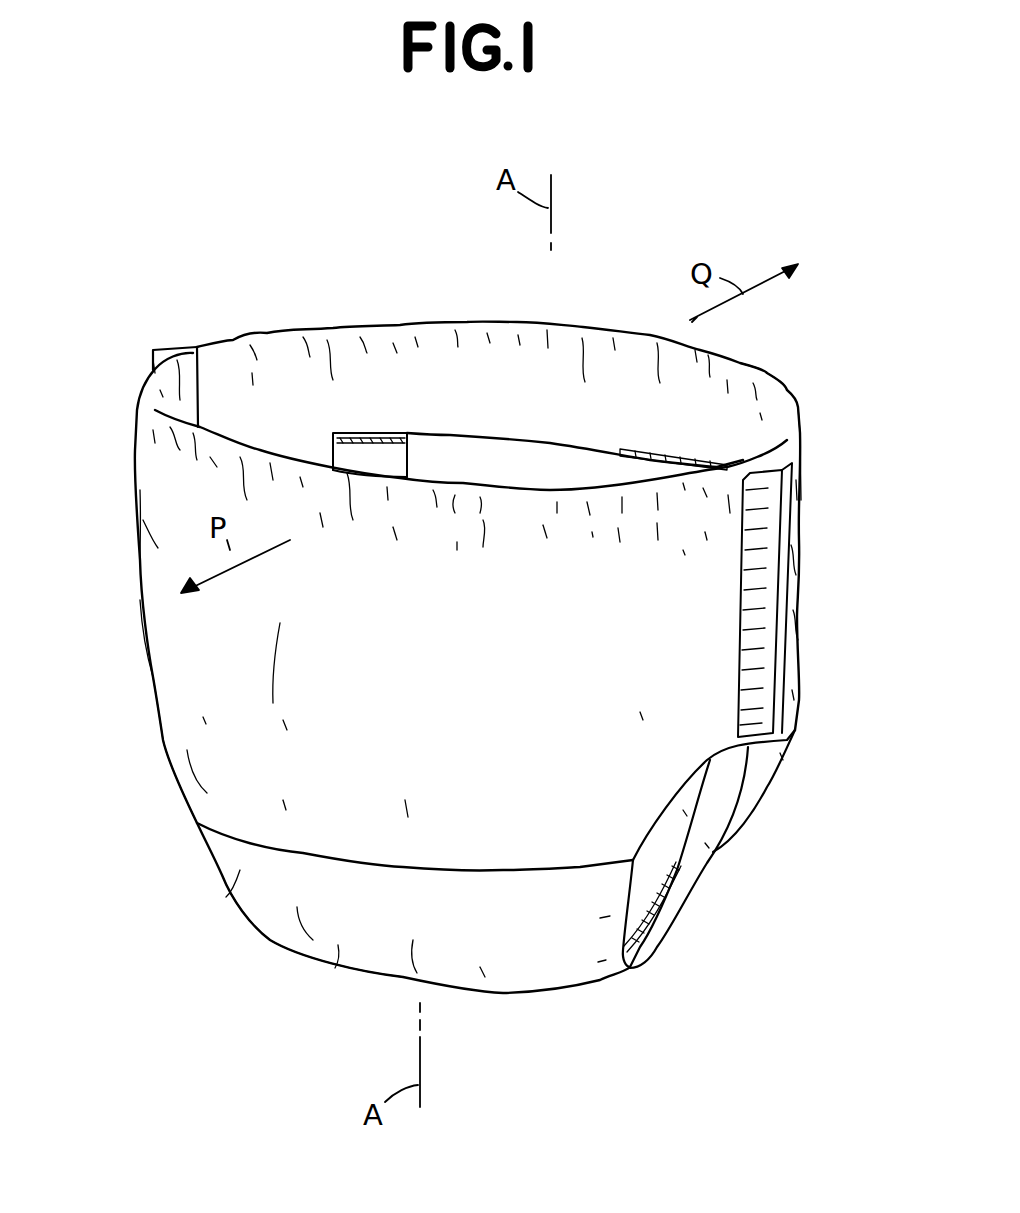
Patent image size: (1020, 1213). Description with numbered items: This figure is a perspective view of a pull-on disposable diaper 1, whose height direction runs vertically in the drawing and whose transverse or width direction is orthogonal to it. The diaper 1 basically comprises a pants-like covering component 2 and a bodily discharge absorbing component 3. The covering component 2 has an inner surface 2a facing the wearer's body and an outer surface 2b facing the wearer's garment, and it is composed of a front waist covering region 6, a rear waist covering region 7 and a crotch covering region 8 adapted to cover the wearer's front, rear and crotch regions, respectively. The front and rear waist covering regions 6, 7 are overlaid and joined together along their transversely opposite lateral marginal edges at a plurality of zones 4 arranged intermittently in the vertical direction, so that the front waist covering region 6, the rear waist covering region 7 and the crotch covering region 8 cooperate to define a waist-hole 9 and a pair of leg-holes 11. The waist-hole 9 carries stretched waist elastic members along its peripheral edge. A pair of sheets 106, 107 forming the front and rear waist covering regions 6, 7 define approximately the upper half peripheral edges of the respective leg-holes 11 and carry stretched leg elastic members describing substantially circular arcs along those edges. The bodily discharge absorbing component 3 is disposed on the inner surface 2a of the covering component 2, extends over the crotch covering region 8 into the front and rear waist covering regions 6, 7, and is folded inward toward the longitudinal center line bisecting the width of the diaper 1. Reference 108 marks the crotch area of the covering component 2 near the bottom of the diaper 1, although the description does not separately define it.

The pull-on disposable diaper 1 is at (647, 276).
The pants-like covering component 2 is at (307, 331).
The inner surface 2a is at (228, 368).
The outer surface 2b is at (160, 517).
The bodily discharge absorbing component 3 is at (436, 438).
The joining zones 4 is at (753, 657).
The front waist covering region 6 is at (185, 735).
The rear waist covering region 7 is at (797, 575).
The crotch covering region 8 is at (236, 897).
The waist-hole 9 is at (767, 407).
The leg-holes 11 is at (663, 867).
The sheet forming the front waist covering region 106 is at (158, 660).
The sheet forming the rear waist covering region 107 is at (798, 497).
The crotch region edge 108 is at (338, 965).